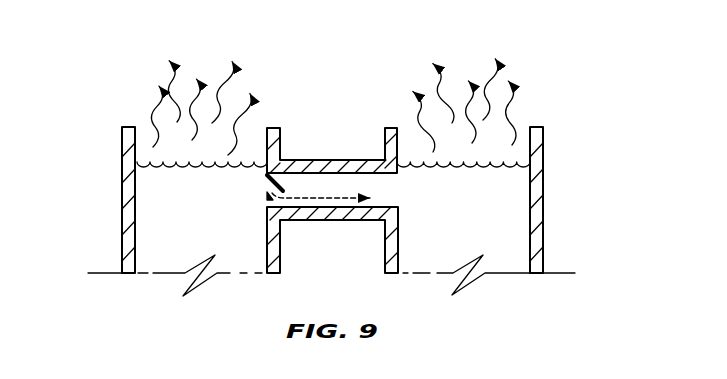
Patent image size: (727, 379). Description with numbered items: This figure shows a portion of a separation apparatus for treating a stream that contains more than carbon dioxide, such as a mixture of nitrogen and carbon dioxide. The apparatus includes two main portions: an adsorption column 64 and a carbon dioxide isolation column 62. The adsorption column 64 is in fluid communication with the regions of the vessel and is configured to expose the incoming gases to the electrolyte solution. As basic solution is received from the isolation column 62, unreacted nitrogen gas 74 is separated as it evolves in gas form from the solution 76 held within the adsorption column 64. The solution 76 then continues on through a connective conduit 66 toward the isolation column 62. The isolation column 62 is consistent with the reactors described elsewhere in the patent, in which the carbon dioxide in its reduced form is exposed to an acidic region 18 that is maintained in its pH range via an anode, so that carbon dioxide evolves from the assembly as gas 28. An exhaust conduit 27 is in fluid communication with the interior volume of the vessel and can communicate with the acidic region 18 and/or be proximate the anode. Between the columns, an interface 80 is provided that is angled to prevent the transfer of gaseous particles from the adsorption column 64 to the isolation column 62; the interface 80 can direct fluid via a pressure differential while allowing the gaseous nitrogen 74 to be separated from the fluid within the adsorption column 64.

The nitrogen gas 74 is at (158, 123).
The gas 28 is at (507, 125).
The adsorption column 64 is at (121, 190).
The CO2 isolation column 62 is at (544, 188).
The exhaust conduit 27 is at (544, 142).
The connective conduit 66 is at (358, 160).
The interface 80 is at (283, 178).
The solution 76 is at (173, 255).
The acidic region 18 is at (502, 255).